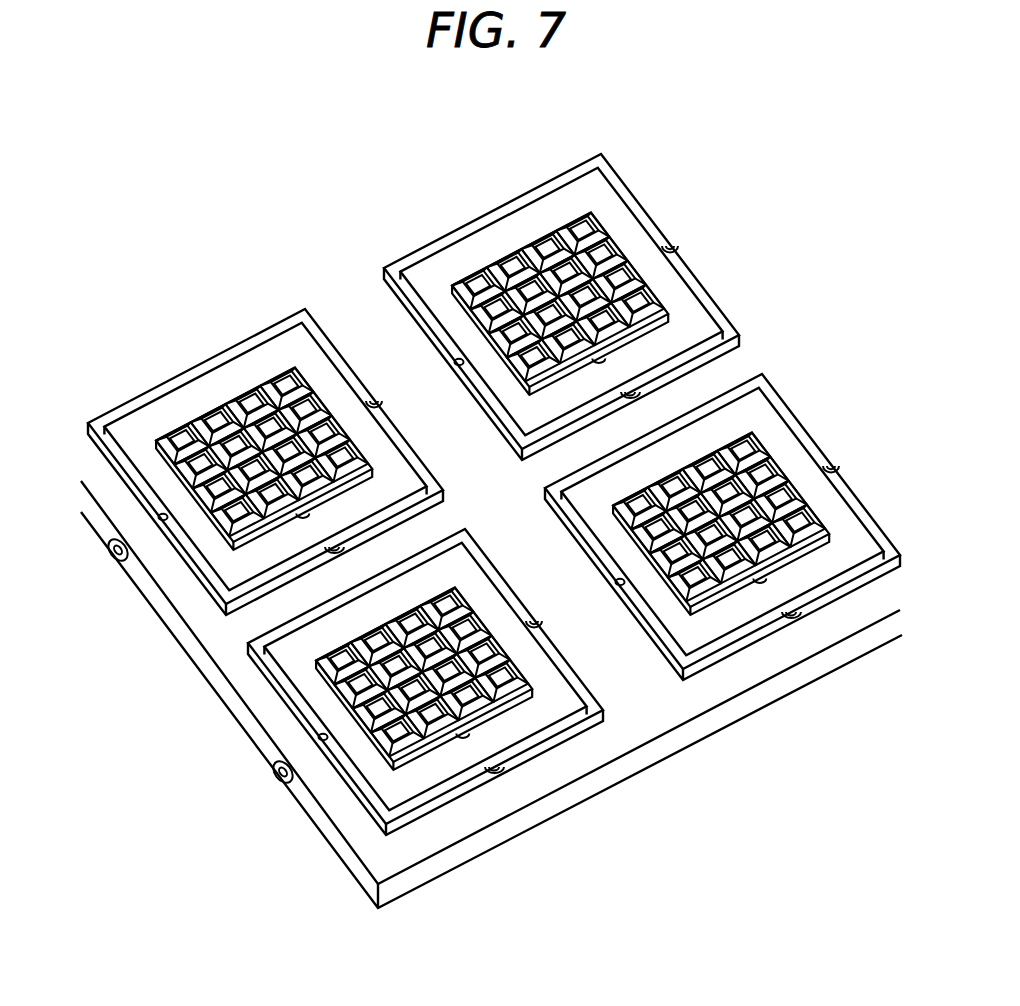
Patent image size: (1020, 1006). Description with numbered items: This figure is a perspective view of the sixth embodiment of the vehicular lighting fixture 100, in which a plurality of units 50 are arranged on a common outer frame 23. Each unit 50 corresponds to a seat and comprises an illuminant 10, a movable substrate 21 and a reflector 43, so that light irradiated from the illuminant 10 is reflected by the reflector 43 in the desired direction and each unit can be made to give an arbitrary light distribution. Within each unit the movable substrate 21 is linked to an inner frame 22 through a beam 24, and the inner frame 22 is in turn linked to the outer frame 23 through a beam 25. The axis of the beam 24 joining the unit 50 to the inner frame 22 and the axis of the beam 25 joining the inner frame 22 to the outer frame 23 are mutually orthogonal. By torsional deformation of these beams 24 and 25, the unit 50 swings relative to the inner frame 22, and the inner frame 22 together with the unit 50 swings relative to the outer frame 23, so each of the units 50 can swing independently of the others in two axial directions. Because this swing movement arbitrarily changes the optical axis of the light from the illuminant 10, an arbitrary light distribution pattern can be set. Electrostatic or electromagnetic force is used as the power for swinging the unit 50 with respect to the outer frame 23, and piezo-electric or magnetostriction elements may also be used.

The vehicular lighting fixture 100 is at (740, 110).
The illuminant 10 is at (424, 754).
The reflector 43 is at (440, 728).
The movable substrate 21 is at (383, 735).
The inner frame 22 is at (297, 660).
The outer frame 23 is at (218, 630).
The beam 24 is at (528, 787).
The beam 25 is at (325, 738).
The unit 50 is at (425, 749).